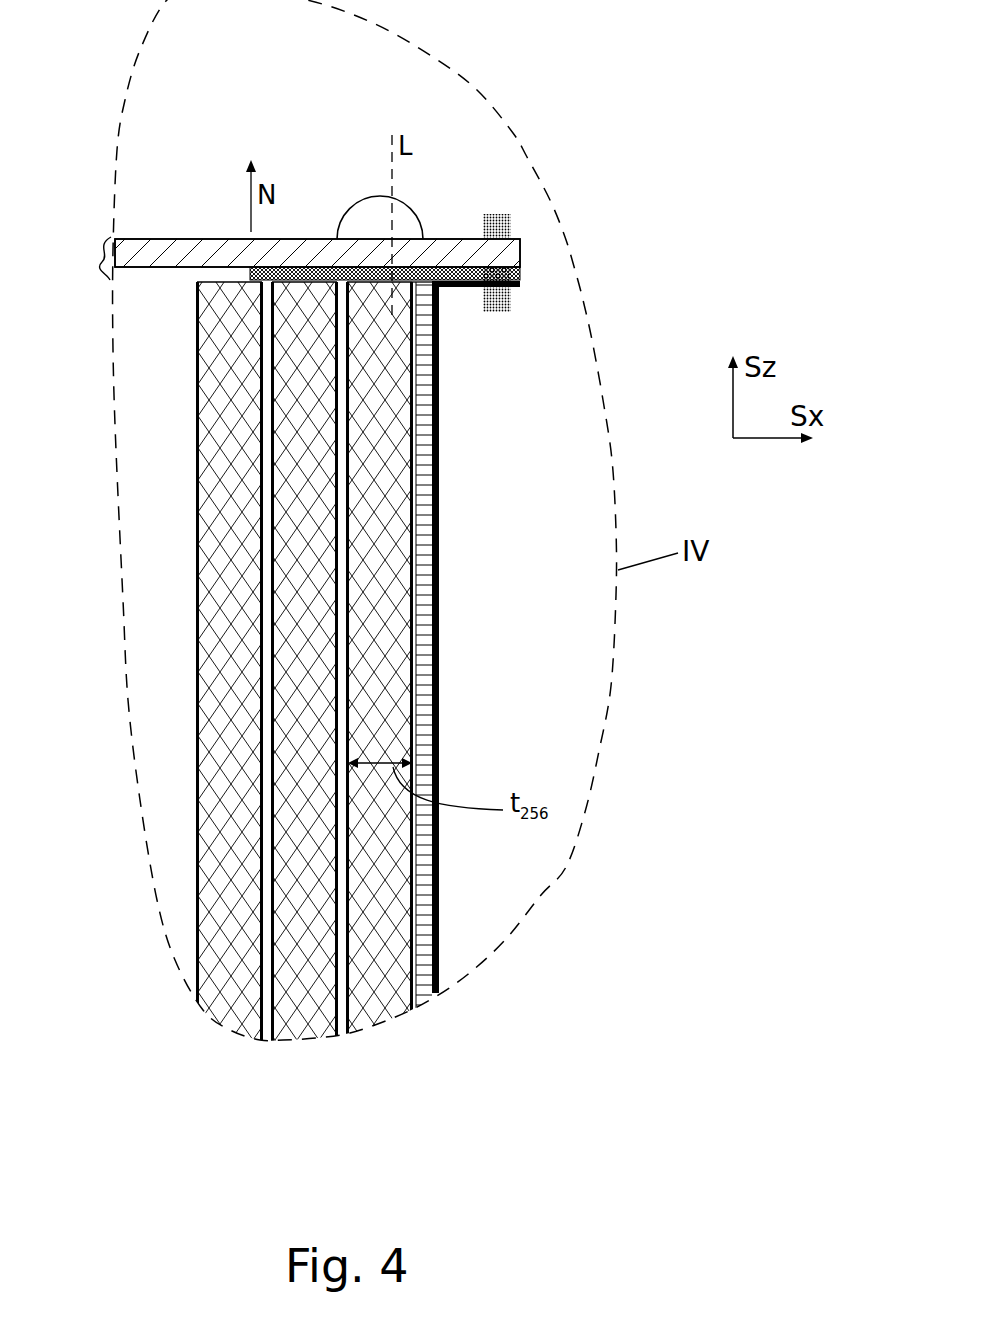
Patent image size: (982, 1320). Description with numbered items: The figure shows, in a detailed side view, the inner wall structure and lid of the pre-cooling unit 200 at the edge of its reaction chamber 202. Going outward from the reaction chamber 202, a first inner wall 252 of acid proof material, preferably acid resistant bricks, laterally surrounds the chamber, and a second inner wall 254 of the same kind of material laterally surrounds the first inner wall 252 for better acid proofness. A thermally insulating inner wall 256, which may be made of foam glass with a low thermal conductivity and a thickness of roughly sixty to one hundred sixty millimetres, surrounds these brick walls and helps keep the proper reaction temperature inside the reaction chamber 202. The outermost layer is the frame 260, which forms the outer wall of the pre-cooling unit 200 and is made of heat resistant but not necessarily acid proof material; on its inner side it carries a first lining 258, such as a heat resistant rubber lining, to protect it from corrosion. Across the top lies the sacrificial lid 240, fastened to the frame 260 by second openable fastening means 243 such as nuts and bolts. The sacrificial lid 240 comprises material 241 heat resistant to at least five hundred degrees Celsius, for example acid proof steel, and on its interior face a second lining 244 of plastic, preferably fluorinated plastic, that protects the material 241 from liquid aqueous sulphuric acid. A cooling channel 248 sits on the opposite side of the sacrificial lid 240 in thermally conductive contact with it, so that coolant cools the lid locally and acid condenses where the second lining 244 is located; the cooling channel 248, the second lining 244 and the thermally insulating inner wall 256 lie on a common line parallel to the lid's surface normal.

The pre-cooling unit 200 is at (480, 425).
The reaction chamber 202 is at (158, 361).
The sacrificial lid 240 is at (530, 238).
The heat resistant material 241 is at (176, 246).
The second openable fastening means 243 is at (510, 225).
The second lining 244 is at (250, 275).
The cooling channel 248 is at (367, 205).
The first inner wall 252 is at (222, 1017).
The second inner wall 254 is at (303, 1028).
The thermally insulating inner wall 256 is at (382, 1007).
The first lining 258 is at (425, 995).
The frame 260 is at (437, 355).